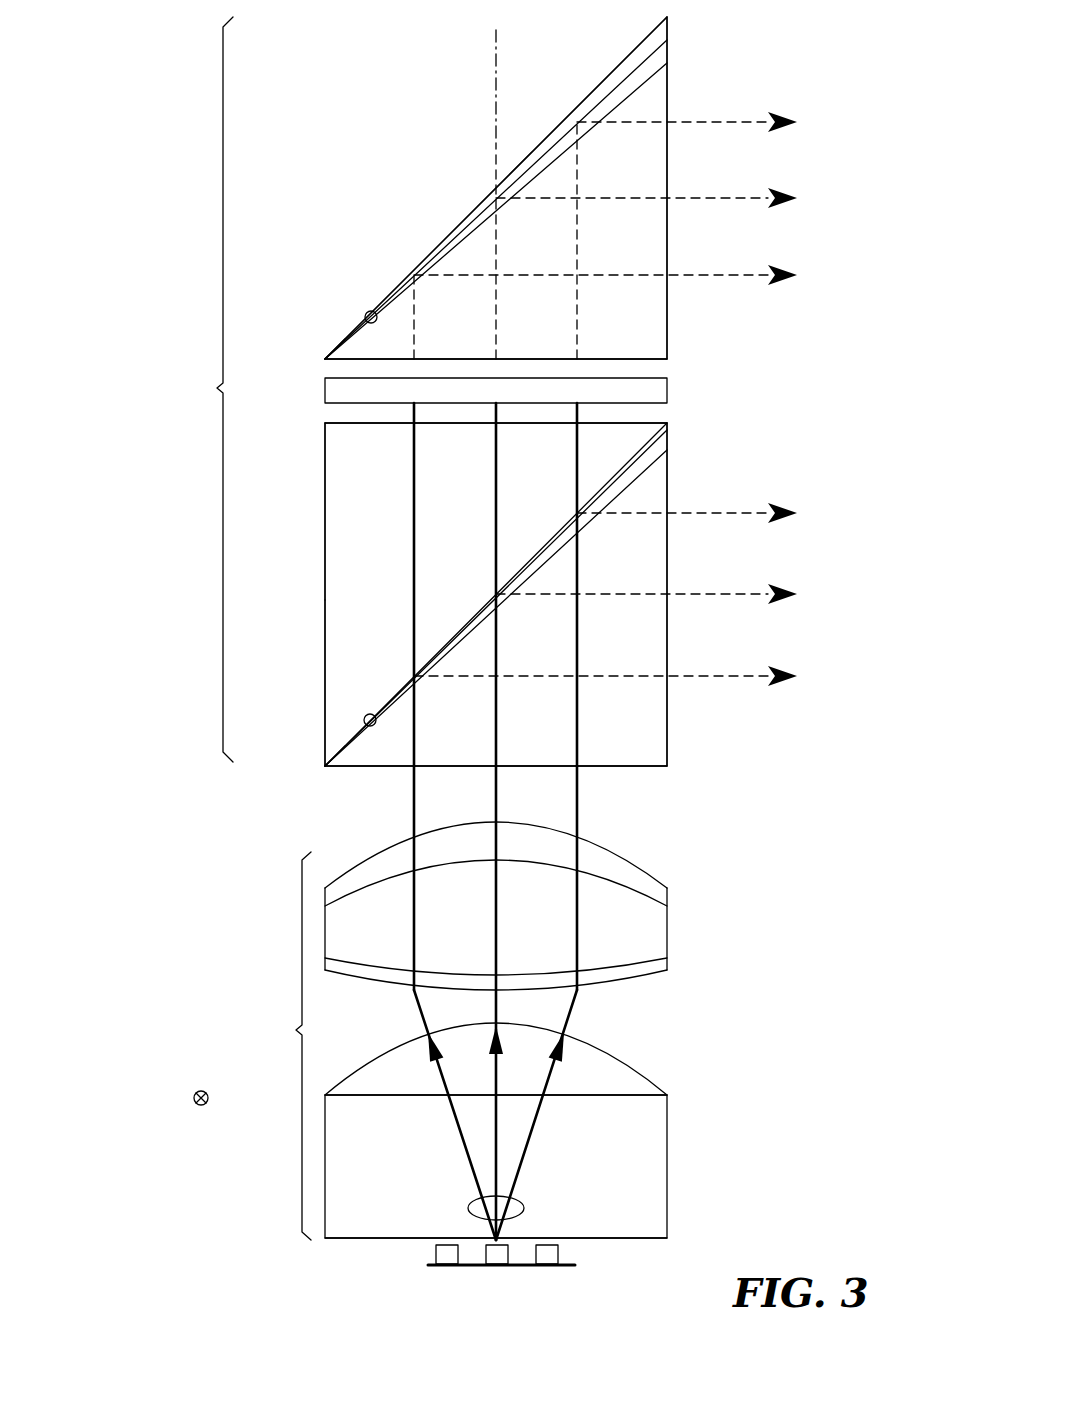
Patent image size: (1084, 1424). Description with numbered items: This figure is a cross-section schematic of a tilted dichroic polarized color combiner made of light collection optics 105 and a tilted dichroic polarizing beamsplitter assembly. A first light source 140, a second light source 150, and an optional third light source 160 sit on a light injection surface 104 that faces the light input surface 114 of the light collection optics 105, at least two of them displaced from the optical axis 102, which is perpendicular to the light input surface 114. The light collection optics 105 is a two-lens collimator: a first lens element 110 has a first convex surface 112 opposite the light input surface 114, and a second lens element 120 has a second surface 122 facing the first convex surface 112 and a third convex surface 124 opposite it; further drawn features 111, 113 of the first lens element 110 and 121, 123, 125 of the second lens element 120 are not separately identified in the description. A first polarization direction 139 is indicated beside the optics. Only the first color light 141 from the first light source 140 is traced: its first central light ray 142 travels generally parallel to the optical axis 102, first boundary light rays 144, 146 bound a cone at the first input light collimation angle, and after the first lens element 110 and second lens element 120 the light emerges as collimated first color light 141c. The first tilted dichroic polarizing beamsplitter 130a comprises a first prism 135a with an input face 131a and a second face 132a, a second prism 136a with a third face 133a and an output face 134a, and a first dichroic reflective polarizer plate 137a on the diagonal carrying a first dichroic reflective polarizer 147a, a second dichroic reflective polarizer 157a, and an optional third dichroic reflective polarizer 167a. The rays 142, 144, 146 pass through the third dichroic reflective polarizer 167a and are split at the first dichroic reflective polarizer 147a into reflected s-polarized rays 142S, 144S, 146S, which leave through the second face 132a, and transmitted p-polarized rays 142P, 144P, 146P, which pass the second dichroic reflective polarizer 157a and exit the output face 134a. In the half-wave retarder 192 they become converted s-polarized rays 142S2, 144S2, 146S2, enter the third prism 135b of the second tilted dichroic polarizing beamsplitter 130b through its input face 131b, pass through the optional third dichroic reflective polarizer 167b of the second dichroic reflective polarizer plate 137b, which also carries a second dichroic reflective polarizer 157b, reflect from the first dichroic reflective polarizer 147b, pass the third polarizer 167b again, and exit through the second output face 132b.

The optical axis 102 is at (494, 44).
The light injection surface 104 is at (572, 1265).
The light collection optics 105 is at (535, 1070).
The first lens element 110 is at (676, 1155).
The housing 111 is at (655, 1213).
The first convex surface 112 is at (648, 1072).
The dome base interface 113 is at (657, 1093).
The light input surface 114 is at (333, 1242).
The second lens element 120 is at (725, 936).
The lens lower inner surface 121 is at (658, 963).
The second surface 122 is at (648, 977).
The lens upper inner surface 123 is at (652, 890).
The third convex surface 124 is at (646, 868).
The lens body 125 is at (652, 913).
The first tilted dichroic polarizing beamsplitter 130a is at (750, 463).
The second tilted dichroic polarizing beamsplitter 130b is at (419, 240).
The input face 131a is at (370, 768).
The input face 131b is at (330, 358).
The second face 132a is at (668, 478).
The second output face 132b is at (667, 88).
The third face 133a is at (325, 612).
The output face 134a is at (325, 423).
The first prism 135a is at (660, 746).
The third prism 135b is at (656, 316).
The second prism 136a is at (325, 560).
The first dichroic reflective polarizer plate 137a is at (364, 718).
The second dichroic reflective polarizer plate 137b is at (367, 312).
The first polarization direction 139 is at (204, 1106).
The first light source 140 is at (497, 1268).
The first color light 141 is at (526, 1212).
The collimated first color light 141c is at (584, 810).
The first central light ray 142 is at (498, 1125).
The transmitted first p-polarized central light ray 142P is at (495, 485).
The reflected first s-polarized central light ray 142S is at (752, 594).
The converted s-polarized central light ray 142S2 is at (752, 198).
The first boundary light ray 144 is at (524, 1160).
The transmitted first p-polarized boundary light ray 144P is at (576, 462).
The reflected first s-polarized boundary light ray 144S is at (752, 513).
The converted s-polarized boundary light ray 144S2 is at (752, 122).
The first boundary light ray 146 is at (469, 1161).
The transmitted first p-polarized boundary light ray 146P is at (413, 512).
The reflected first s-polarized boundary light ray 146S is at (752, 676).
The converted s-polarized boundary light ray 146S2 is at (752, 275).
The first dichroic reflective polarizer 147a is at (662, 431).
The first dichroic reflective polarizer 147b is at (625, 78).
The second light source 150 is at (547, 1268).
The second dichroic reflective polarizer 157a is at (640, 437).
The second dichroic reflective polarizer 157b is at (650, 42).
The optional third light source 160 is at (447, 1268).
The optional third dichroic reflective polarizer 167a is at (660, 450).
The optional third dichroic reflective polarizer 167b is at (612, 108).
The half-wave retarder 192 is at (325, 390).